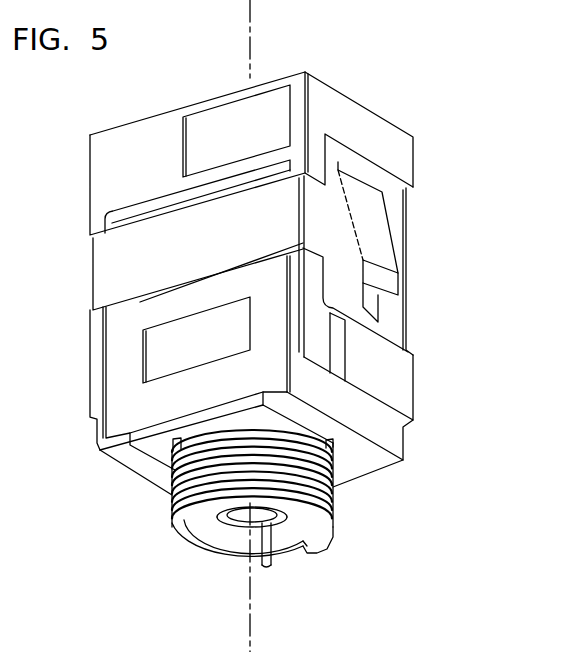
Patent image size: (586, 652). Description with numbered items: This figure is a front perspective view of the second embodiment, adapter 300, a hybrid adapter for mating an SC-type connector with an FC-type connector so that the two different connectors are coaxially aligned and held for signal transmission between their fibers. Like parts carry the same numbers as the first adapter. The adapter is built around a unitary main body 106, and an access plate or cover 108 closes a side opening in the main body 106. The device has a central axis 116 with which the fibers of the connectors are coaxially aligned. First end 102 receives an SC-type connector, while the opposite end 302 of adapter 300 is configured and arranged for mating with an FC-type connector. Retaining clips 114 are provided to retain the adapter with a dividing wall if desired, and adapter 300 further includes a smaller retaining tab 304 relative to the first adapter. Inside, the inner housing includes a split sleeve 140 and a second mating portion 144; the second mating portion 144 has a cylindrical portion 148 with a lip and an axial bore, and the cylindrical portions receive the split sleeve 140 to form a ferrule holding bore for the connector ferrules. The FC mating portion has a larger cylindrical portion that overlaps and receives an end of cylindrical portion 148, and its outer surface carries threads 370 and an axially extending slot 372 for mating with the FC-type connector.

The adapter 300 is at (425, 158).
The first end 102 is at (358, 102).
The central axis 116 is at (250, 65).
The retaining clips 114 is at (387, 260).
The retaining tab 304 is at (398, 370).
The main body 106 is at (405, 447).
The access plate or cover 108 is at (137, 415).
The threads 370 is at (172, 491).
The end 302 is at (331, 537).
The split sleeve 140 is at (251, 511).
The cylindrical portion 148 is at (241, 527).
The second mating portion 144 is at (285, 526).
The axially extending slot 372 is at (271, 560).